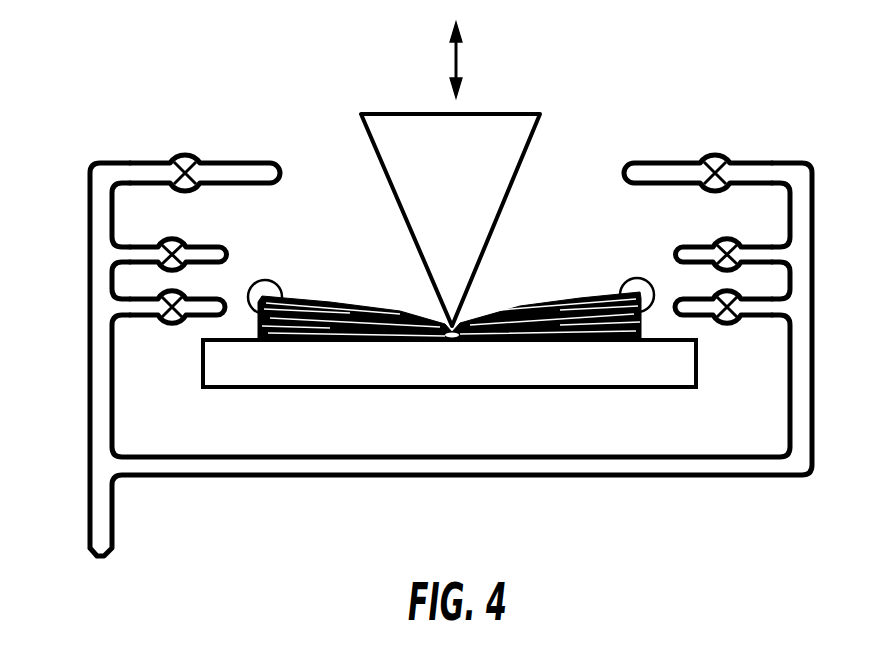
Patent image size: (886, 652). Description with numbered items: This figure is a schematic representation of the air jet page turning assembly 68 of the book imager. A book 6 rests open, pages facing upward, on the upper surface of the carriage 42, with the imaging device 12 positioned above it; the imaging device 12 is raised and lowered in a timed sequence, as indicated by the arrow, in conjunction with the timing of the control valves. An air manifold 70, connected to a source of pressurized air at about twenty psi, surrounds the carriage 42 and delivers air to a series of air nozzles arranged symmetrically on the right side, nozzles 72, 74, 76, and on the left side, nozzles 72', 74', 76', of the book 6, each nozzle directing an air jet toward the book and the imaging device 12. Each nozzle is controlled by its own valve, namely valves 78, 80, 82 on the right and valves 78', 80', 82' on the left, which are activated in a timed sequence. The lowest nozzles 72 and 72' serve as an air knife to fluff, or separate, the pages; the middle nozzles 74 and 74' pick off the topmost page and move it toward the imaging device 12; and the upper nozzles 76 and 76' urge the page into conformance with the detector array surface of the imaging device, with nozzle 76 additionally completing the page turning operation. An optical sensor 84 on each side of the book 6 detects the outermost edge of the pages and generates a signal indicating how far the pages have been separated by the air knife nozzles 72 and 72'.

The page turning assembly 68 is at (693, 115).
The imaging device 12 is at (489, 128).
The air manifold 70 is at (207, 470).
The air nozzle 76' is at (228, 154).
The air nozzle 74' is at (205, 233).
The air nozzle 72' is at (210, 274).
The air nozzle 72 is at (705, 282).
The air nozzle 74 is at (704, 239).
The air nozzle 76 is at (688, 154).
The valve 82' is at (150, 141).
The valve 80' is at (108, 234).
The valve 78' is at (107, 289).
The valve 82 is at (735, 146).
The valve 80 is at (787, 225).
The valve 78 is at (787, 282).
The optical sensor 84 is at (279, 285).
The book 6 is at (503, 304).
The carriage 42 is at (584, 372).